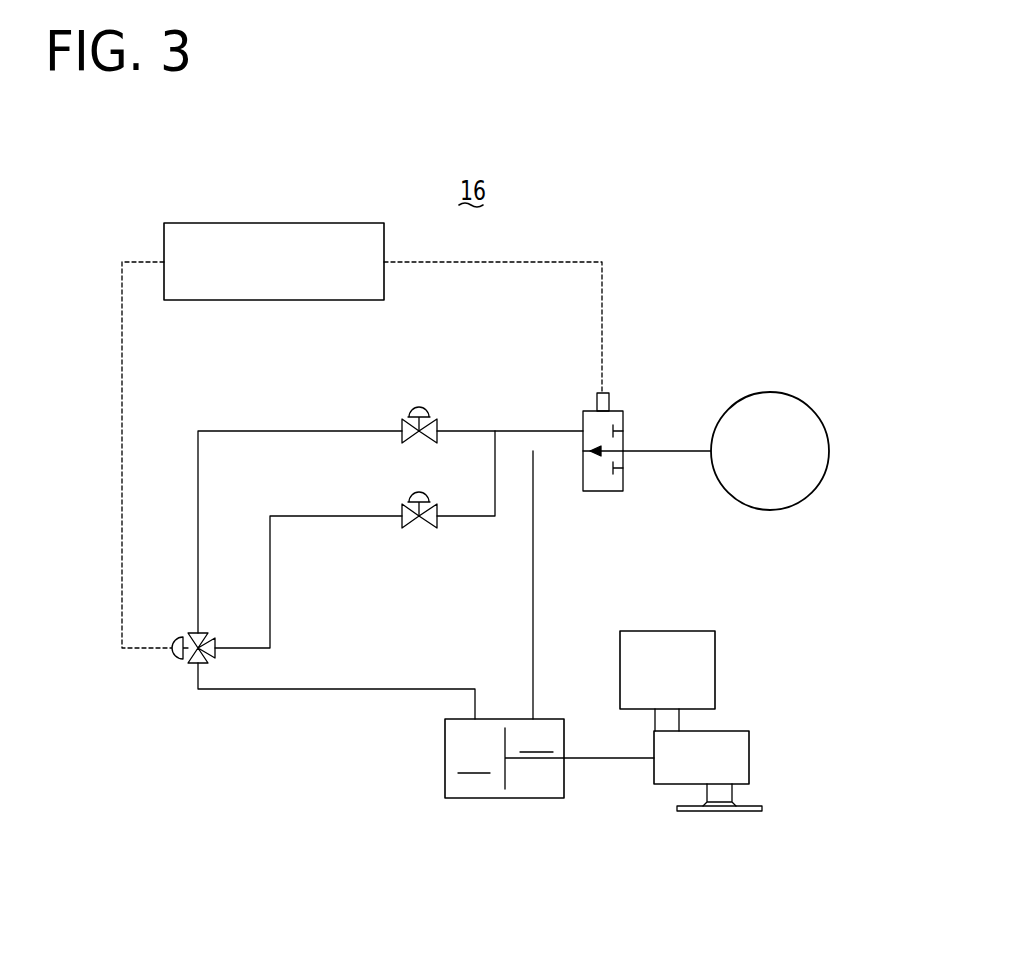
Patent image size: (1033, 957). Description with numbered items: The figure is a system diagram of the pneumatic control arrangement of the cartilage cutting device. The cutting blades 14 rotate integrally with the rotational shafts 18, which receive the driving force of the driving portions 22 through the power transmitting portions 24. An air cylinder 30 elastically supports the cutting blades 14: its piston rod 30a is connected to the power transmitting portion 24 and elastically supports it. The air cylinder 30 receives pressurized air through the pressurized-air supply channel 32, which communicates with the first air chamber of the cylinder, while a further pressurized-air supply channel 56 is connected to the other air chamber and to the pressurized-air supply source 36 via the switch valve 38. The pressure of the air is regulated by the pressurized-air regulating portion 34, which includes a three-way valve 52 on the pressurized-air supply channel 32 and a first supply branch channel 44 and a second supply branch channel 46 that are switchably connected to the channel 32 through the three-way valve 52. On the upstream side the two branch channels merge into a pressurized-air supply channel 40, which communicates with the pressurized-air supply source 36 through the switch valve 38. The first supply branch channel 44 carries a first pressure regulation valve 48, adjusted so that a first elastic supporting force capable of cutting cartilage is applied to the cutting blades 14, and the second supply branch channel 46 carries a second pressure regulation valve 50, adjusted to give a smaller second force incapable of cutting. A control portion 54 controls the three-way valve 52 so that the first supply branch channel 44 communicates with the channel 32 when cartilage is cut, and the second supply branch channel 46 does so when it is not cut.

The cutting blades 14 is at (747, 806).
The rotational shafts 18 is at (727, 795).
The driving portions 22 is at (712, 665).
The power transmitting portions 24 is at (747, 742).
The air cylinder 30 is at (445, 738).
The piston rod 30a is at (604, 757).
The pressurized-air supply channel 32 is at (288, 689).
The pressurized-air regulating portion 34 is at (383, 399).
The pressurized-air supply source 36 is at (800, 412).
The switch valve 38 is at (615, 416).
The pressurized-air supply channel 40 is at (545, 431).
The first supply branch channel 44 is at (308, 431).
The second supply branch channel 46 is at (355, 516).
The first pressure regulation valve 48 is at (429, 412).
The second pressure regulation valve 50 is at (430, 499).
The three-way valve 52 is at (197, 666).
The control portion 54 is at (270, 223).
The pressurized-air supply channel 56 is at (533, 545).